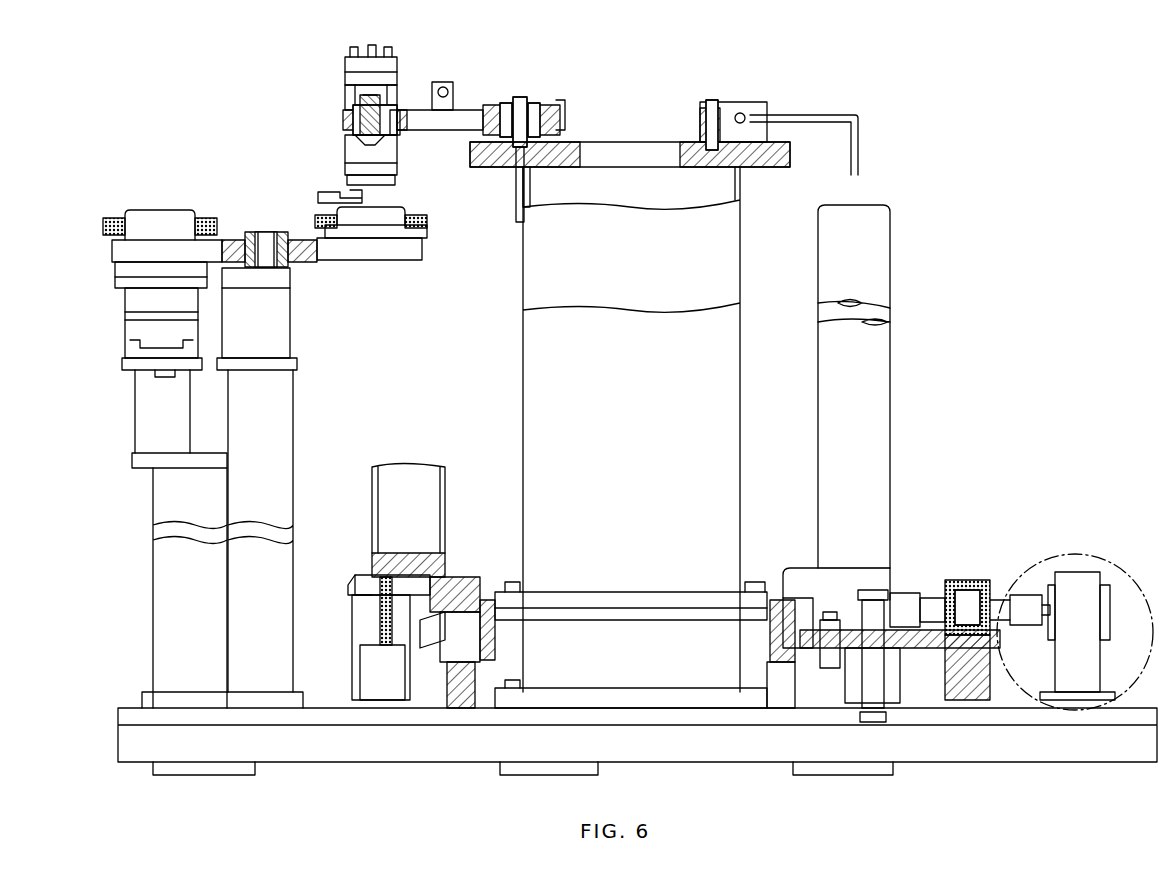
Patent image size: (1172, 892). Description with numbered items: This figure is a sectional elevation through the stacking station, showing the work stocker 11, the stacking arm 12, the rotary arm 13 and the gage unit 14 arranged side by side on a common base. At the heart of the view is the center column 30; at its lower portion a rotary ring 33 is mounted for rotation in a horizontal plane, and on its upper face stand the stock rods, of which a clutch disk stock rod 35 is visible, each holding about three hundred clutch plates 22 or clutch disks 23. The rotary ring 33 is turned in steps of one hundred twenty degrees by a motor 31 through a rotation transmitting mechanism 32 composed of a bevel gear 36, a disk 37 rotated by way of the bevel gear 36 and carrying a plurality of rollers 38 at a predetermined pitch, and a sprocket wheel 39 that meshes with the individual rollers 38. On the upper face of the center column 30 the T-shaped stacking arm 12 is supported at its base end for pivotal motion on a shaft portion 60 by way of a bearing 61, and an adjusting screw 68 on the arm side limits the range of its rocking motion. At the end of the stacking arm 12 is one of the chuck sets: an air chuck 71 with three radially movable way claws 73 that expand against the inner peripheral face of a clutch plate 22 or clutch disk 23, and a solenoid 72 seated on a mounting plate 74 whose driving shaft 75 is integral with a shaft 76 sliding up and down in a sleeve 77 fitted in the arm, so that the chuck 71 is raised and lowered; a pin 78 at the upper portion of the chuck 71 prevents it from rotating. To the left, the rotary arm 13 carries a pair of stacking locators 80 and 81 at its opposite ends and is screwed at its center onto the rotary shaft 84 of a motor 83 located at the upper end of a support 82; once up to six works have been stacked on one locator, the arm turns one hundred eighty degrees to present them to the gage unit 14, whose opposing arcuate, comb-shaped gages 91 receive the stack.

The work stocker 11 is at (915, 208).
The stacking arm 12 is at (465, 118).
The rotary arm 13 is at (350, 258).
The gage unit 14 is at (120, 323).
The clutch plate 22 is at (427, 232).
The clutch disk 23 is at (427, 220).
The center column 30 is at (745, 238).
The motor 31 is at (1105, 565).
The rotation transmitting mechanism 32 is at (893, 604).
The rotary ring 33 is at (778, 595).
The clutch disk stock rod 35 is at (885, 352).
The bevel gear 36 is at (905, 597).
The disk 37 is at (862, 568).
The rollers 38 is at (832, 600).
The sprocket wheel 39 is at (755, 630).
The shaft portion 60 is at (578, 132).
The bearing 61 is at (528, 100).
The adjusting screw 68 is at (453, 85).
The chuck 71 is at (397, 160).
The solenoid 72 is at (397, 72).
The way claws 73 is at (335, 195).
The mounting plate 74 is at (345, 60).
The driving shaft 75 is at (345, 95).
The shaft 76 is at (343, 118).
The sleeve 77 is at (345, 135).
The pin 78 is at (400, 132).
The stacking locator 80 is at (385, 225).
The stacking locator 81 is at (155, 222).
The support 82 is at (285, 445).
The motor 83 is at (292, 328).
The rotary shaft 84 is at (255, 235).
The gage 91 is at (112, 250).